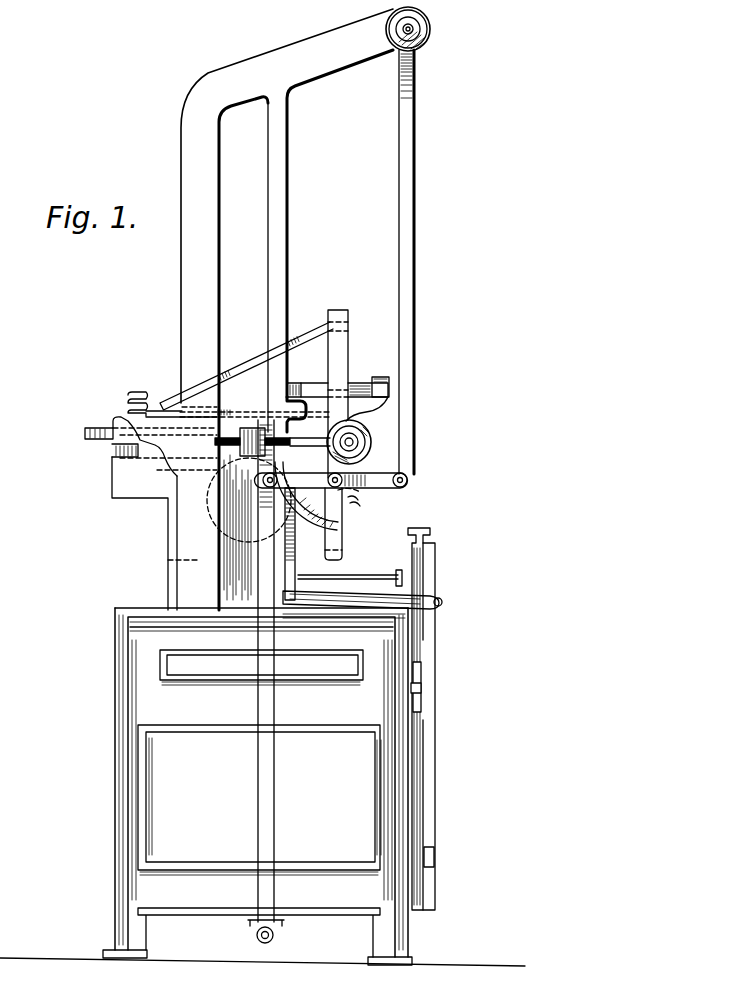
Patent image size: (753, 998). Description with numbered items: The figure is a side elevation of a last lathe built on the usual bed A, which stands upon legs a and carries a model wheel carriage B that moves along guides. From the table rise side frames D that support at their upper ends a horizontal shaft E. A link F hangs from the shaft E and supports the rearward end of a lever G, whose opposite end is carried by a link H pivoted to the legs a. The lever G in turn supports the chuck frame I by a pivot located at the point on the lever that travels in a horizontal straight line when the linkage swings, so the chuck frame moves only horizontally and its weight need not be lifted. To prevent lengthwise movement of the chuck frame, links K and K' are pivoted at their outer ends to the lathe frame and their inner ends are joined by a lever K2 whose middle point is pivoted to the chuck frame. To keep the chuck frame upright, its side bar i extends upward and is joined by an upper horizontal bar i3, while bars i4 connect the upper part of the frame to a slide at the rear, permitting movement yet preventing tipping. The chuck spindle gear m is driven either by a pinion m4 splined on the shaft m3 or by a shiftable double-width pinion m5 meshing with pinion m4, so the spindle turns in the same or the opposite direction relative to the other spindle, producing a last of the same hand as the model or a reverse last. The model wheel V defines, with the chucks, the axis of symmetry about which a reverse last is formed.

The side frame D is at (181, 268).
The horizontal shaft E is at (430, 33).
The link F is at (416, 250).
The upper horizontal bar i3 is at (338, 309).
The bar i4 is at (256, 362).
The link K is at (276, 407).
The lever K2 is at (318, 382).
The link K' is at (375, 373).
The pinion m4 is at (362, 426).
The shaft m3 is at (371, 442).
The double-width pinion m5 is at (322, 434).
The model wheel carriage B is at (226, 536).
The lever G is at (378, 490).
The side bar i is at (352, 506).
The gear m is at (360, 511).
The chuck frame I is at (346, 557).
The model wheel V is at (298, 538).
The link H is at (257, 760).
The bed A is at (261, 782).
The leg a is at (118, 801).